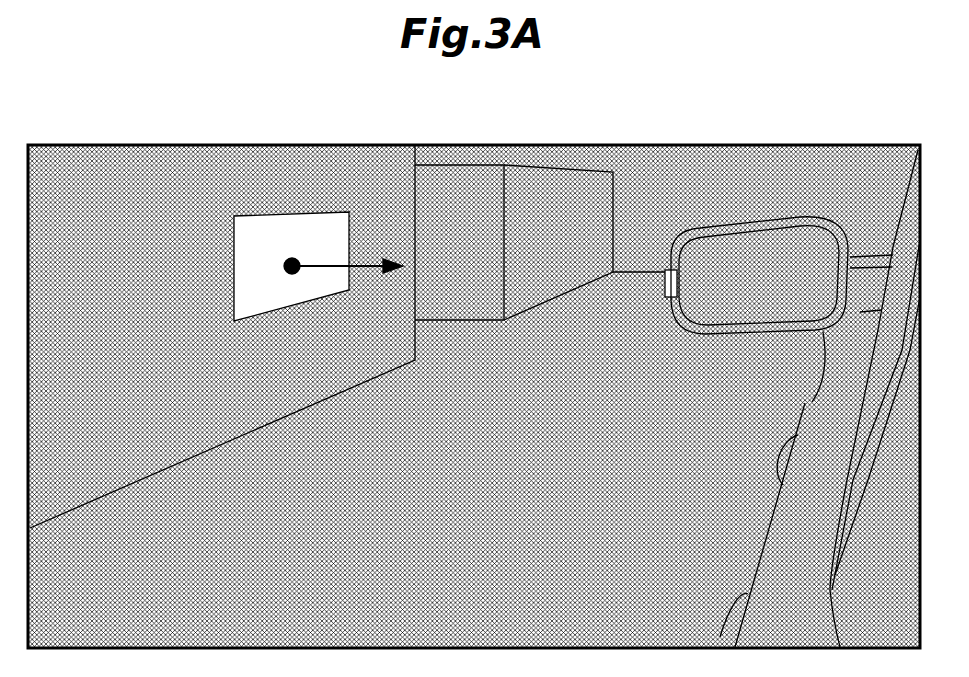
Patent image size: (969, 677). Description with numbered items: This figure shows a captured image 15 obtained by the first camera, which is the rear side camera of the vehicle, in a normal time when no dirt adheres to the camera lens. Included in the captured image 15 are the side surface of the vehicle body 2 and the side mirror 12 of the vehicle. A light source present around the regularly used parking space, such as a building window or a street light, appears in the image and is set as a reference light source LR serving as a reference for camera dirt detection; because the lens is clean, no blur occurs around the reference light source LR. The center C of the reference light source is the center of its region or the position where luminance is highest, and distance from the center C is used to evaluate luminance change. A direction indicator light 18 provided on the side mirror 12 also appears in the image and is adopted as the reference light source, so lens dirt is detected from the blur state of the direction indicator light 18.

The captured image 15 is at (112, 145).
The reference light source LR is at (265, 232).
The center of the reference light source C is at (293, 258).
The direction indicator light 18 is at (665, 283).
The side mirror 12 is at (797, 218).
The vehicle body 2 is at (805, 403).